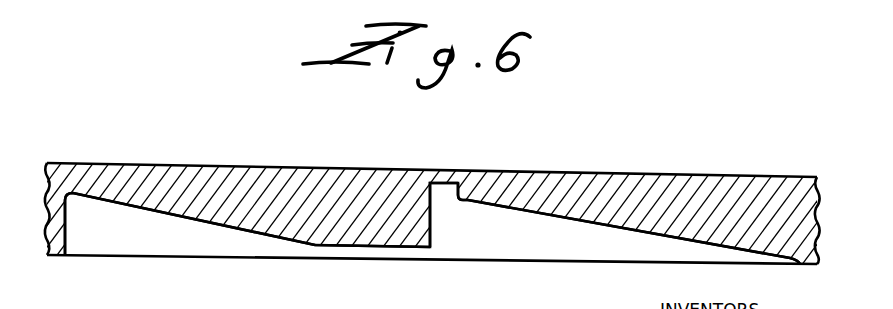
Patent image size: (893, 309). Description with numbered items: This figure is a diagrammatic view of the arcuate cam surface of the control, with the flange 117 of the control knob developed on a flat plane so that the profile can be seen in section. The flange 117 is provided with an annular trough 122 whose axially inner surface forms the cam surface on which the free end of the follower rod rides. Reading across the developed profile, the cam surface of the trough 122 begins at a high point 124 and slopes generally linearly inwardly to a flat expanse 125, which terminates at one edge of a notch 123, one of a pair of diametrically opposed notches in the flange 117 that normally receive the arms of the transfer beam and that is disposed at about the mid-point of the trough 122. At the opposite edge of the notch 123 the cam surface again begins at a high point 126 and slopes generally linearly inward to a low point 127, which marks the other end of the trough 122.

The flange 117 is at (617, 182).
The annular trough 122 is at (202, 243).
The notch 123 is at (432, 215).
The high point 124 is at (78, 198).
The flat expanse 125 is at (378, 246).
The high point 126 is at (453, 182).
The low point 127 is at (797, 260).